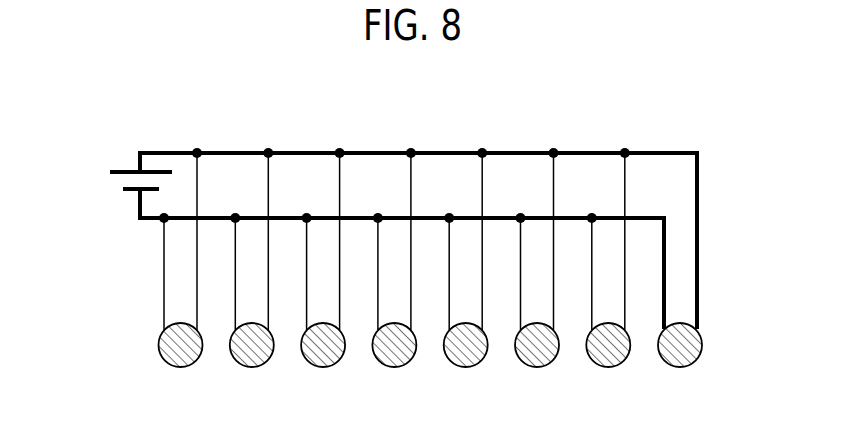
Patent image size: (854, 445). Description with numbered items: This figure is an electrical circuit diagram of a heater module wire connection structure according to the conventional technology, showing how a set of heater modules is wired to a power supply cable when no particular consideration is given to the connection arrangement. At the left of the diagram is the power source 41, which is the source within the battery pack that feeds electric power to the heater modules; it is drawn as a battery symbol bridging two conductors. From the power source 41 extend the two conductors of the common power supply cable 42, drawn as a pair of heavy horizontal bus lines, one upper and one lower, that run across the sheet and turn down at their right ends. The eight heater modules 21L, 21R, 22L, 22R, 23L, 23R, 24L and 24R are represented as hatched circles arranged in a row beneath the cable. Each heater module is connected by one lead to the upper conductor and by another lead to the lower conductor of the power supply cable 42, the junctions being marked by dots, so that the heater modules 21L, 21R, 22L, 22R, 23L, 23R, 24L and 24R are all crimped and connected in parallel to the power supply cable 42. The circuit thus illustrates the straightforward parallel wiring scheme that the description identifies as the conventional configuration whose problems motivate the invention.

The power source 41 is at (122, 181).
The common power supply cable 42 is at (662, 152).
The heater module 21L is at (186, 367).
The heater module 21R is at (257, 367).
The heater module 22L is at (328, 367).
The heater module 22R is at (399, 367).
The heater module 23L is at (471, 367).
The heater module 23R is at (542, 367).
The heater module 24L is at (613, 367).
The heater module 24R is at (685, 367).